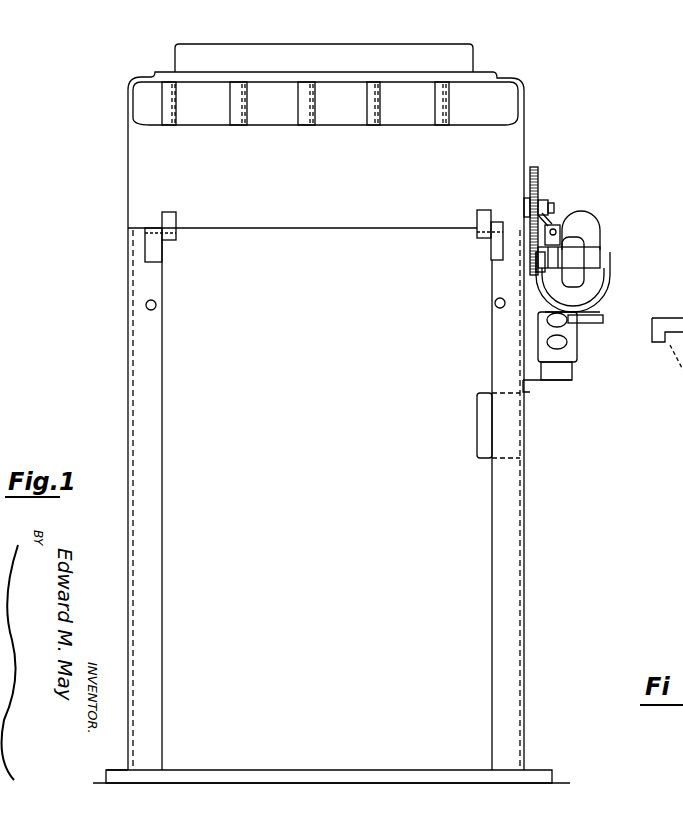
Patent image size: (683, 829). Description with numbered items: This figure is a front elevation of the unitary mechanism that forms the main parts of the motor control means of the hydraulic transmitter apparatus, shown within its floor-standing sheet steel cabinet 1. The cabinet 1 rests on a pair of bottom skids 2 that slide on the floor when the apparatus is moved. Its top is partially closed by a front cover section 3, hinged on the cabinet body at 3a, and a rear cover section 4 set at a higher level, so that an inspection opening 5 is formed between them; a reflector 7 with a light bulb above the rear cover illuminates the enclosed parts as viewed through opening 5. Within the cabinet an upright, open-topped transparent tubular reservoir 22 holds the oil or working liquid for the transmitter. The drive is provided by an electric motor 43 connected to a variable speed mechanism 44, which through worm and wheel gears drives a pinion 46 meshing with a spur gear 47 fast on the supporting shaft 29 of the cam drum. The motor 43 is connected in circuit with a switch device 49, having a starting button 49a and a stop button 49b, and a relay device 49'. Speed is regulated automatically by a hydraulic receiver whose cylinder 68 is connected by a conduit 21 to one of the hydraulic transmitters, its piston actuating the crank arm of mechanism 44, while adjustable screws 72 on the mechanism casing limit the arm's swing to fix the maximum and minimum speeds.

The cabinet 1 is at (127, 440).
The bottom skids 2 is at (338, 772).
The front cover section 3 is at (137, 152).
The hinge of front cover 3a is at (176, 236).
The rear cover section 4 is at (524, 112).
The inspection opening 5 is at (505, 98).
The reflector 7 is at (176, 44).
The tubular reservoir 22 is at (172, 111).
The conduit 21 is at (558, 223).
The supporting shaft 29 is at (554, 206).
The electric motor 43 is at (610, 292).
The variable speed mechanism 44 is at (585, 290).
The pinion 46 is at (536, 268).
The spur gear 47 is at (539, 176).
The switch device 49 is at (566, 357).
The starting button 49a is at (558, 350).
The stop button 49b is at (562, 328).
The relay device 49' is at (474, 425).
The receiver cylinder 68 is at (596, 222).
The adjustable screws 72 is at (578, 230).